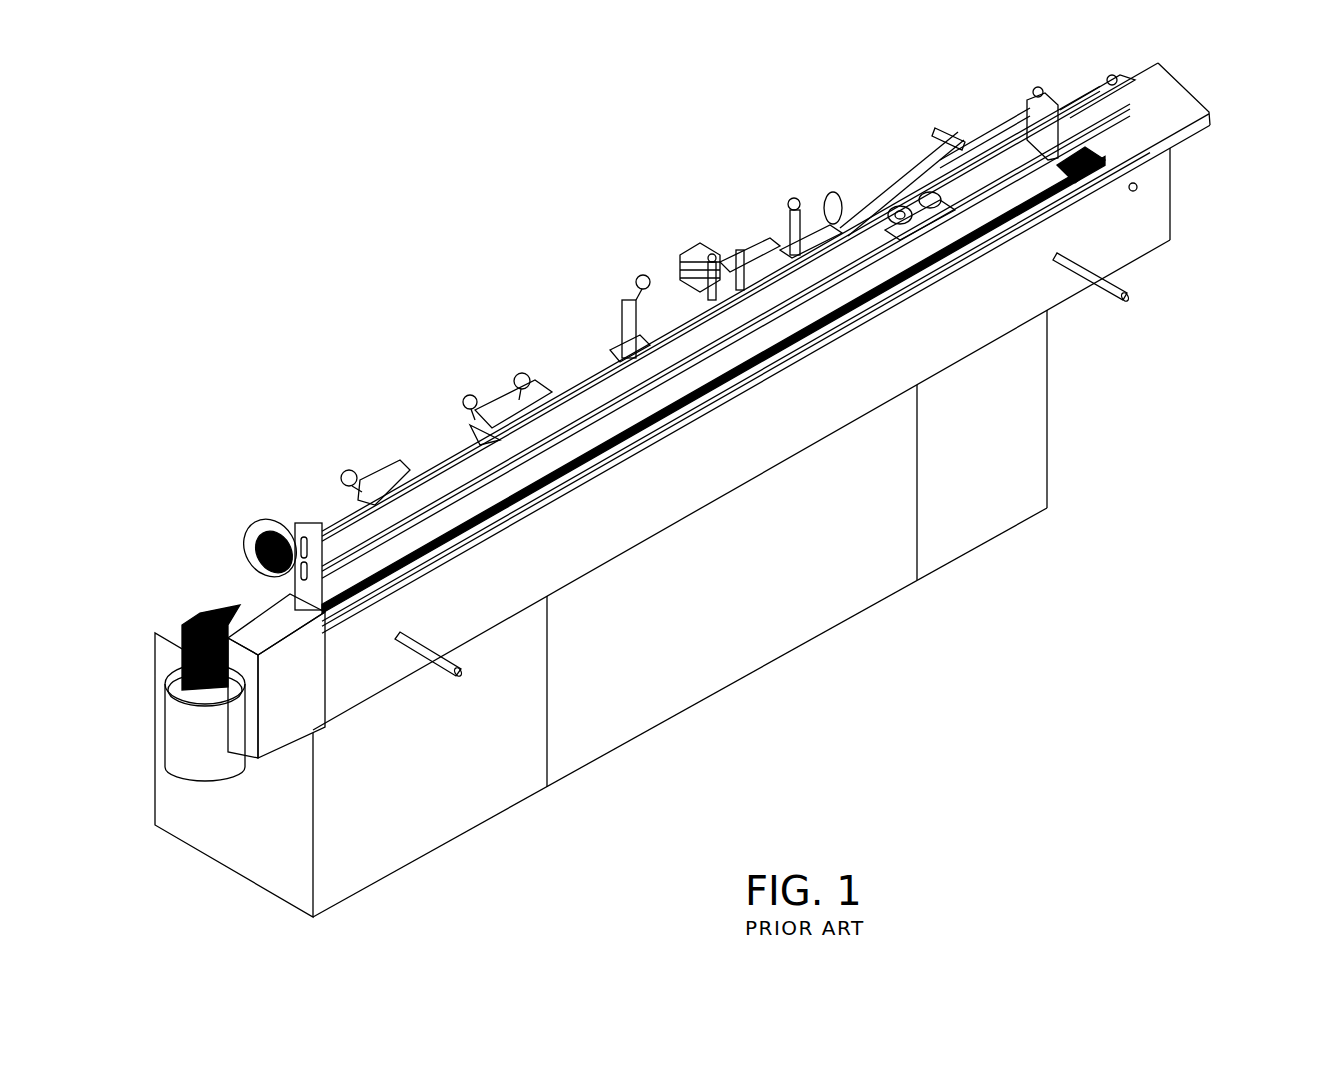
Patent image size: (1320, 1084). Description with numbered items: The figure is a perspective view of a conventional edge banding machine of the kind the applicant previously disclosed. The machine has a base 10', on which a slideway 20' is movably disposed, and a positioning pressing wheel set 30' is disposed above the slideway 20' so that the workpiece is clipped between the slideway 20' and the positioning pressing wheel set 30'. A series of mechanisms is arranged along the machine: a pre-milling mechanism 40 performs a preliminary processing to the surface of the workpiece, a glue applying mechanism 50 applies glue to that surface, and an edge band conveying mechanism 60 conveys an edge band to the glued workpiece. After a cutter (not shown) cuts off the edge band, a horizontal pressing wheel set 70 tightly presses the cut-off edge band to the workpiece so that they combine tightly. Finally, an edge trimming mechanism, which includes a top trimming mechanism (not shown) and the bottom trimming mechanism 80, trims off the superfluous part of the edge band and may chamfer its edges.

The base 10' is at (701, 490).
The slideway 20' is at (1138, 131).
The positioning pressing wheel set 30' is at (985, 115).
The pre-milling mechanism 40 is at (909, 180).
The glue applying mechanism 50 is at (796, 197).
The edge band conveying mechanism 60 is at (688, 226).
The horizontal pressing wheel set 70 is at (737, 278).
The bottom trimming mechanism 80 is at (495, 377).